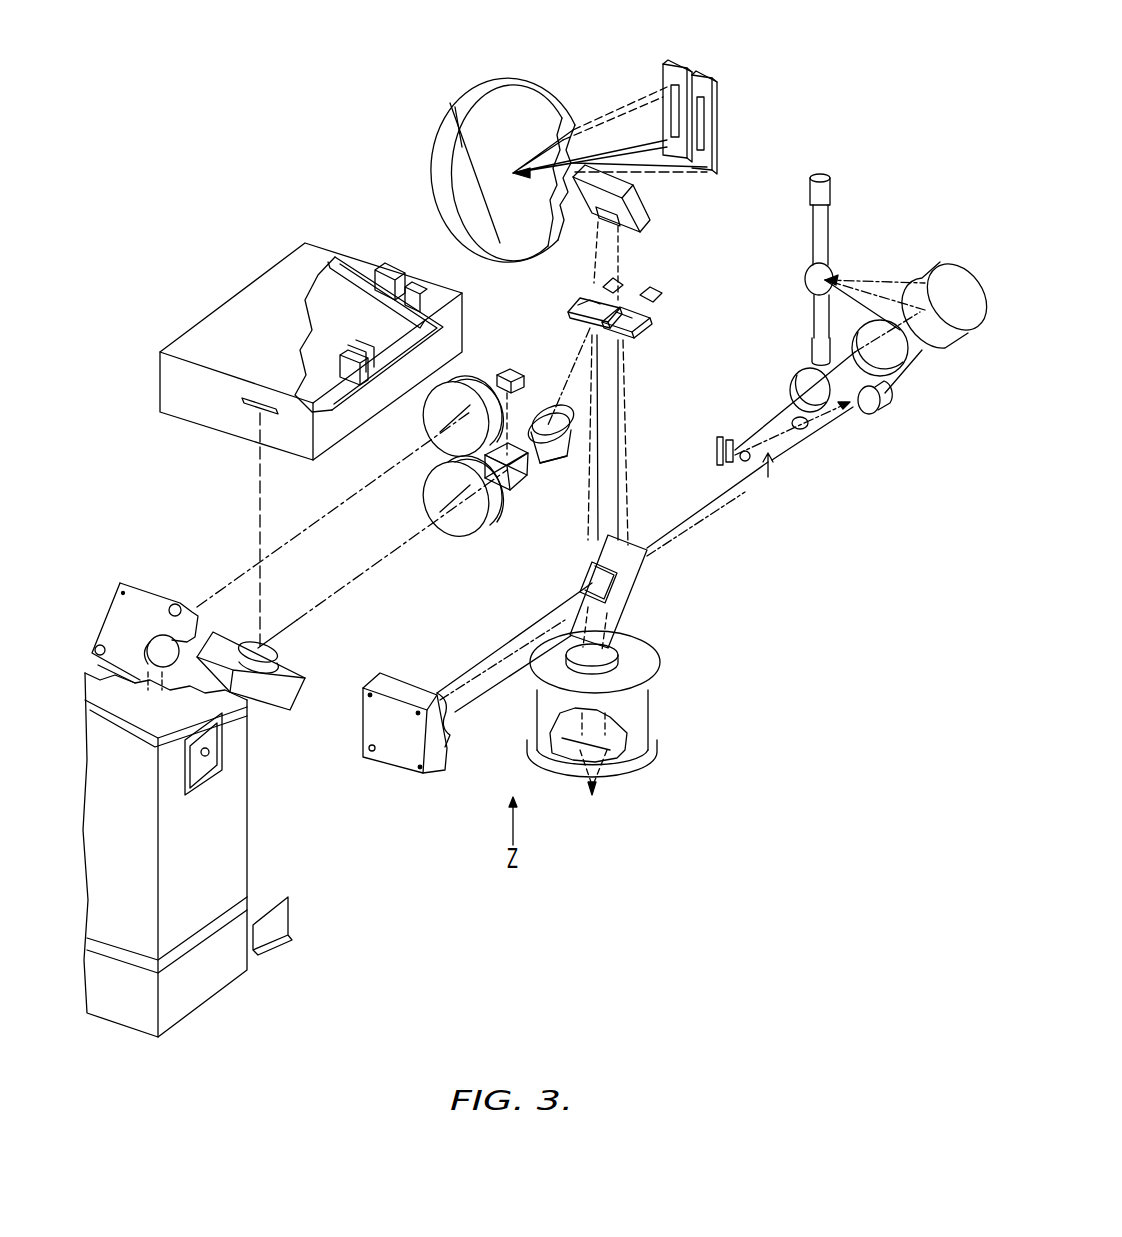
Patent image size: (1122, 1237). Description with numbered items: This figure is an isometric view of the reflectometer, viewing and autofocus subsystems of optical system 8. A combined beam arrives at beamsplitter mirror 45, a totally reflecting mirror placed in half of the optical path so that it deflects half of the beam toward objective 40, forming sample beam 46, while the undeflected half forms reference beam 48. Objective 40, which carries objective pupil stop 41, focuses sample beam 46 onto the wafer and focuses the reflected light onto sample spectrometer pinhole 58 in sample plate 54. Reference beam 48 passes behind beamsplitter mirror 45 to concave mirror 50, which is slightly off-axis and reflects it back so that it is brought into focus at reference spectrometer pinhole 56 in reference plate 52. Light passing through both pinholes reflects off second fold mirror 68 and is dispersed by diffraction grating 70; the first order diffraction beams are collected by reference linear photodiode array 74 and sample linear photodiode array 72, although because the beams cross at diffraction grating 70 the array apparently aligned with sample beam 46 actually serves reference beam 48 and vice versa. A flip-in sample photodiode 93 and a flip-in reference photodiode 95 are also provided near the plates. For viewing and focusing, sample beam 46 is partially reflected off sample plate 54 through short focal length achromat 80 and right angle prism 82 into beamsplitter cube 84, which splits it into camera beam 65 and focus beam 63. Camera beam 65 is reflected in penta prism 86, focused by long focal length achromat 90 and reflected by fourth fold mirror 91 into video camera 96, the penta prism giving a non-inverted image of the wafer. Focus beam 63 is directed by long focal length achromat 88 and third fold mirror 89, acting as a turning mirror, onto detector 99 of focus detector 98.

The optical system 8 is at (166, 143).
The diffraction grating 70 is at (510, 82).
The reference linear photodiode array 74 is at (685, 66).
The sample linear photodiode array 72 is at (718, 93).
The second fold mirror 68 is at (650, 212).
The flip-in sample photodiode 93 is at (622, 282).
The flip-in reference photodiode 95 is at (657, 292).
The sample plate 54 is at (573, 306).
The sample spectrometer pinhole 58 is at (590, 300).
The reference spectrometer pinhole 56 is at (630, 312).
The reference plate 52 is at (645, 328).
The sample beam 46 is at (598, 433).
The reference beam 48 is at (625, 452).
The penta prism 86 is at (503, 370).
The achromat with a short focal length 80 is at (538, 400).
The right angle prism 82 is at (548, 458).
The beamsplitter cube 84 is at (510, 487).
The achromat with a long focal length 90 is at (463, 378).
The achromat with a long focal length 88 is at (490, 516).
The focus detector 98 is at (222, 300).
The detector 99 is at (253, 414).
The camera beam 65 is at (320, 518).
The focus beam 63 is at (357, 580).
The fourth fold mirror 91 is at (120, 583).
The third fold mirror 89 is at (295, 705).
The video camera 96 is at (248, 831).
The concave mirror 50 is at (445, 780).
The beamsplitter mirror 45 is at (644, 590).
The objective pupil stop 41 is at (618, 650).
The objective 40 is at (656, 660).